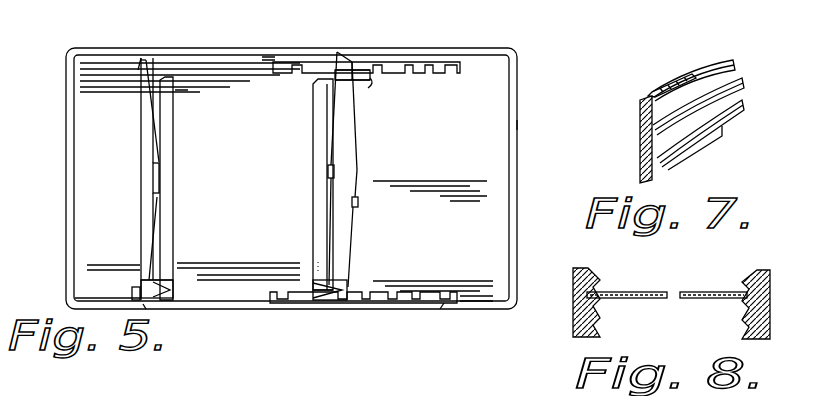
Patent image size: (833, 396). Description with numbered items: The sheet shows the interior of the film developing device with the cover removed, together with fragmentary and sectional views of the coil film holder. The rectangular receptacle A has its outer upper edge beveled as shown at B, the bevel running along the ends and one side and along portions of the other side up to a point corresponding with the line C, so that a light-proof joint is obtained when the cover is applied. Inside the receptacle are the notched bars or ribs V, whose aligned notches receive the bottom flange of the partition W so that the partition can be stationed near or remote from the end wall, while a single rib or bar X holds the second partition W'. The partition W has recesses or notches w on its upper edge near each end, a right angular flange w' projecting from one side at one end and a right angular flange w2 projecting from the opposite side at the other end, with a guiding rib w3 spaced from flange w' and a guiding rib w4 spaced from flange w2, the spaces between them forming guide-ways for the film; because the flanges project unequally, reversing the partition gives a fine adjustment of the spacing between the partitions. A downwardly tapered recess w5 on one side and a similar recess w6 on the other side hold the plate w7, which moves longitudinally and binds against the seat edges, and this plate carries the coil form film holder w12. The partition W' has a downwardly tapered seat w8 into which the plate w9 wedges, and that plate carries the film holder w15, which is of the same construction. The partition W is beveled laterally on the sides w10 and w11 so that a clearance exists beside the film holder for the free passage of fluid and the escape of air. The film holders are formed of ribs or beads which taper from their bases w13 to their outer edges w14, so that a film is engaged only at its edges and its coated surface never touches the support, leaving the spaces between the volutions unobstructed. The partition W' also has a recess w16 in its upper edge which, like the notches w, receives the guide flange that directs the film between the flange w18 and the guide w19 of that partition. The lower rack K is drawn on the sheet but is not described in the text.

In FIG. 5, the receptacle A is at (500, 170).
In FIG. 5, the beveled upper edge B is at (518, 124).
In FIG. 5, the line of bevel termination C is at (443, 312).
In FIG. 5, the notched bars or ribs V is at (432, 76).
In FIG. 5, the lower toothed rack K is at (400, 292).
In FIG. 5, the rib or bar X is at (140, 68).
In FIG. 5, the partition W is at (363, 169).
In FIG. 5, the partition W' is at (129, 179).
In FIG. 5, the recesses or notches w is at (352, 52).
In FIG. 5, the right angular flange w' is at (363, 55).
In FIG. 5, the right angular flange w2 is at (325, 300).
In FIG. 5, the guiding rib w3 is at (363, 84).
In FIG. 5, the guiding rib w4 is at (318, 288).
In FIG. 5, the tapered recess w5 is at (358, 205).
In FIG. 5, the tapered recess w6 is at (330, 164).
In FIG. 5, the plate w7 is at (333, 172).
In FIG. 7, the plate w7 is at (645, 100).
In FIG. 5, the downwardly tapered seat w8 is at (150, 193).
In FIG. 5, the plate w9 is at (159, 176).
In FIG. 5, the beveled side w10 is at (333, 78).
In FIG. 5, the beveled side w11 is at (358, 128).
In FIG. 5, the coil form film holder w12 is at (313, 208).
In FIG. 7, the bases w13 is at (647, 170).
In FIG. 8, the bases w13 is at (583, 320).
In FIG. 7, the outer edges w14 is at (718, 120).
In FIG. 8, the outer edges w14 is at (598, 285).
In FIG. 5, the film holder w15 is at (166, 134).
In FIG. 5, the recess w16 is at (149, 280).
In FIG. 5, the flange w18 is at (165, 303).
In FIG. 5, the guide w19 is at (170, 290).